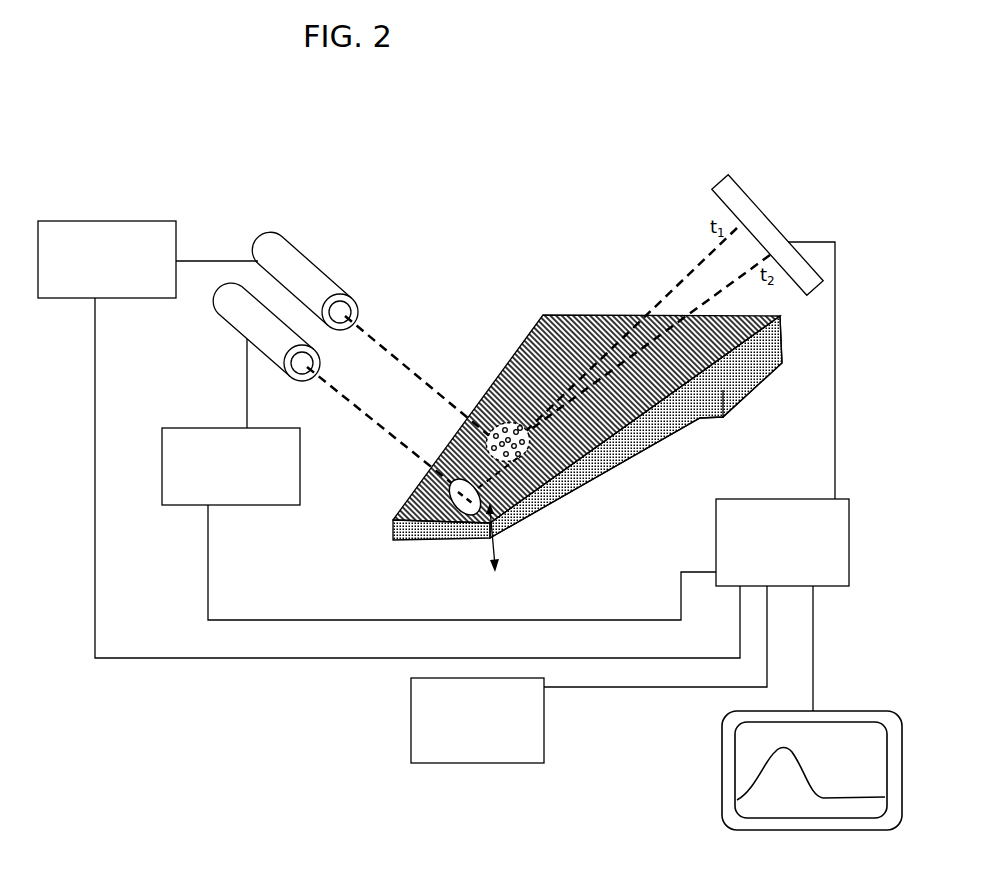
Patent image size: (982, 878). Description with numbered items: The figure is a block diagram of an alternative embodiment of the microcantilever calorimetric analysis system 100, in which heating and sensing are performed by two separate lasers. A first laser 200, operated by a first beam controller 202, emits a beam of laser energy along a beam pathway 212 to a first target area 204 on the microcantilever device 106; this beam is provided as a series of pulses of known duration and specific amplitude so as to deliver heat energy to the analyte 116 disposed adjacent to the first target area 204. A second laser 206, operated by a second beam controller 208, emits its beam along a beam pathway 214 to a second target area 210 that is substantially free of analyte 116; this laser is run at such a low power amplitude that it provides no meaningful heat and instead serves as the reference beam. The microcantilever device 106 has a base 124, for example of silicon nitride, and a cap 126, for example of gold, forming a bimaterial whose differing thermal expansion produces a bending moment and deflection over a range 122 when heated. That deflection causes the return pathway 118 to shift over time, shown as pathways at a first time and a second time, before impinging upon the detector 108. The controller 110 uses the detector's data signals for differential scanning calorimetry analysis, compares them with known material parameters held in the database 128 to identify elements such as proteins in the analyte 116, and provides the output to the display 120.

The microcantilever calorimetric analysis system 100 is at (556, 241).
The microcantilever device 106 is at (500, 530).
The detector 108 is at (749, 198).
The controller 110 is at (716, 522).
The analyte 116 is at (527, 457).
The return pathway 118 is at (703, 304).
The display 120 is at (722, 748).
The range 122 is at (487, 533).
The base 124 is at (643, 423).
The cap 126 is at (505, 376).
The database 128 is at (507, 763).
The first laser 200 is at (295, 247).
The first beam controller 202 is at (148, 298).
The first target area 204 is at (483, 443).
The second laser 206 is at (257, 325).
The second beam controller 208 is at (273, 505).
The second target area 210 is at (450, 503).
The beam pathway 212 is at (380, 335).
The beam pathway 214 is at (368, 428).